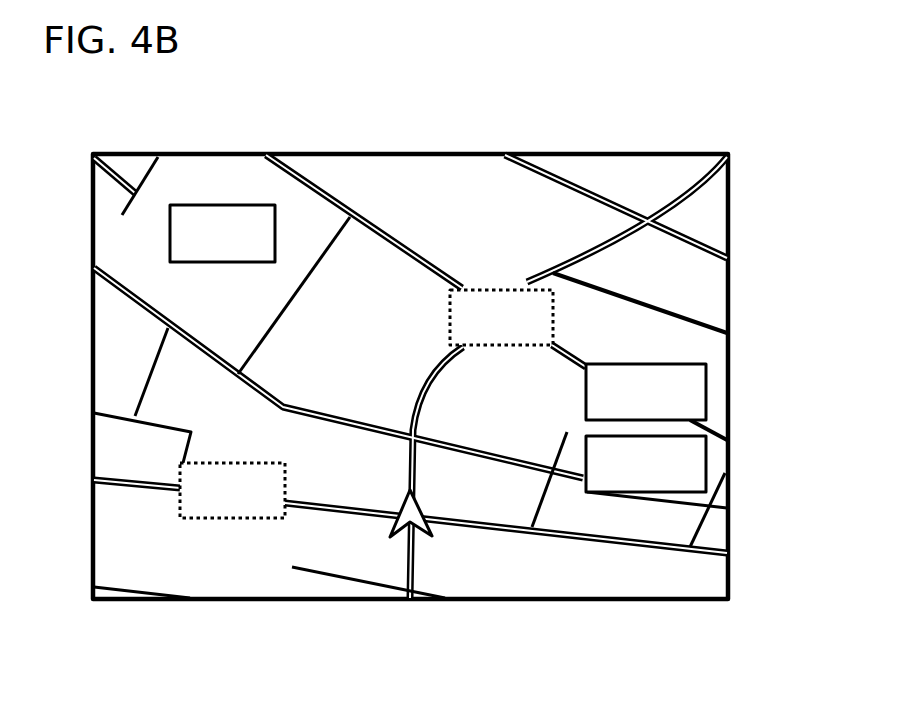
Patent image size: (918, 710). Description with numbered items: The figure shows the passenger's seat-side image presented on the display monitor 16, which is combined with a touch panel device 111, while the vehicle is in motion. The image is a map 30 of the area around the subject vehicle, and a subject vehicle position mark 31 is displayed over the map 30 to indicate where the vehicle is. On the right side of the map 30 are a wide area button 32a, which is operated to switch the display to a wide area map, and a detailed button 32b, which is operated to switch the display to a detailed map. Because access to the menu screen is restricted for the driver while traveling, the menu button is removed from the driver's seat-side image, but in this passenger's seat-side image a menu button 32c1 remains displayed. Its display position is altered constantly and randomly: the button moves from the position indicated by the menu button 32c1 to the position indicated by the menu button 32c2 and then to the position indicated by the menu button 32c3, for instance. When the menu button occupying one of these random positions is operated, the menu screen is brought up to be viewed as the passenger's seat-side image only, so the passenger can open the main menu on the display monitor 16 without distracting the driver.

The display monitor 16 is at (616, 100).
The touch panel device 111 is at (410, 376).
The map 30 is at (694, 292).
The subject vehicle position mark 31 is at (400, 502).
The wide area button 32a is at (694, 400).
The detailed button 32b is at (698, 466).
The menu button 32c1 is at (218, 263).
The menu button 32c2 is at (500, 348).
The menu button 32c3 is at (224, 519).